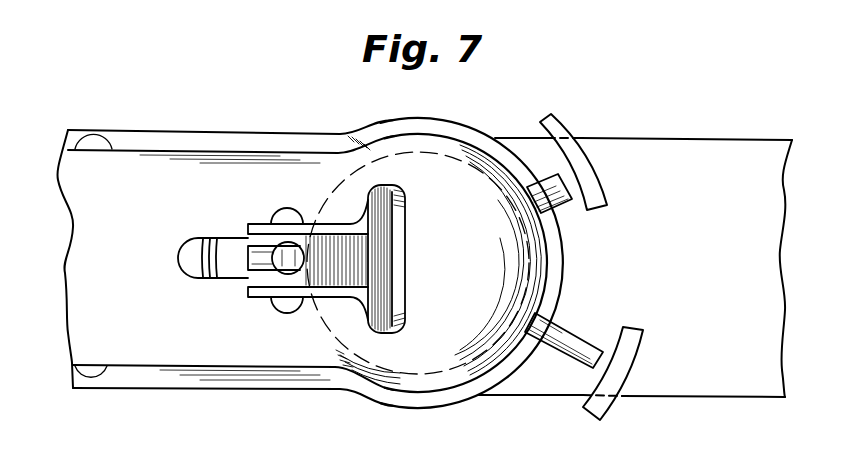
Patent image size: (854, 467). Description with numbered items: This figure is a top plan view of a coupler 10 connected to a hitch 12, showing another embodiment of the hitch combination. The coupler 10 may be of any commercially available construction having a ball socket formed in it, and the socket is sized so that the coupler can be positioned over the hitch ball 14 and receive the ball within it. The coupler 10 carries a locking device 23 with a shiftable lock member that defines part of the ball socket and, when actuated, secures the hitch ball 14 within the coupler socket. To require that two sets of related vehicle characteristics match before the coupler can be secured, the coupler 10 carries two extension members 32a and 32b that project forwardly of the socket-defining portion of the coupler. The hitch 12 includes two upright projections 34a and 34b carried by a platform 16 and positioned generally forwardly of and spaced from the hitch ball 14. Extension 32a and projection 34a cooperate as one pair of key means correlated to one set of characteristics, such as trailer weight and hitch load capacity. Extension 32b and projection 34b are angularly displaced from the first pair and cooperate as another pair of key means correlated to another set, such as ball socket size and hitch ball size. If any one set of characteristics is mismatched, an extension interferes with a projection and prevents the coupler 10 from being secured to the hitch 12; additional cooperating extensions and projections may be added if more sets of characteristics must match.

The coupler 10 is at (160, 126).
The hitch 12 is at (741, 153).
The hitch ball 14 is at (338, 188).
The platform 16 is at (723, 385).
The locking device 23 is at (331, 309).
The extension member 32a is at (563, 348).
The extension member 32b is at (546, 188).
The upright projection 34a is at (636, 343).
The upright projection 34b is at (607, 193).